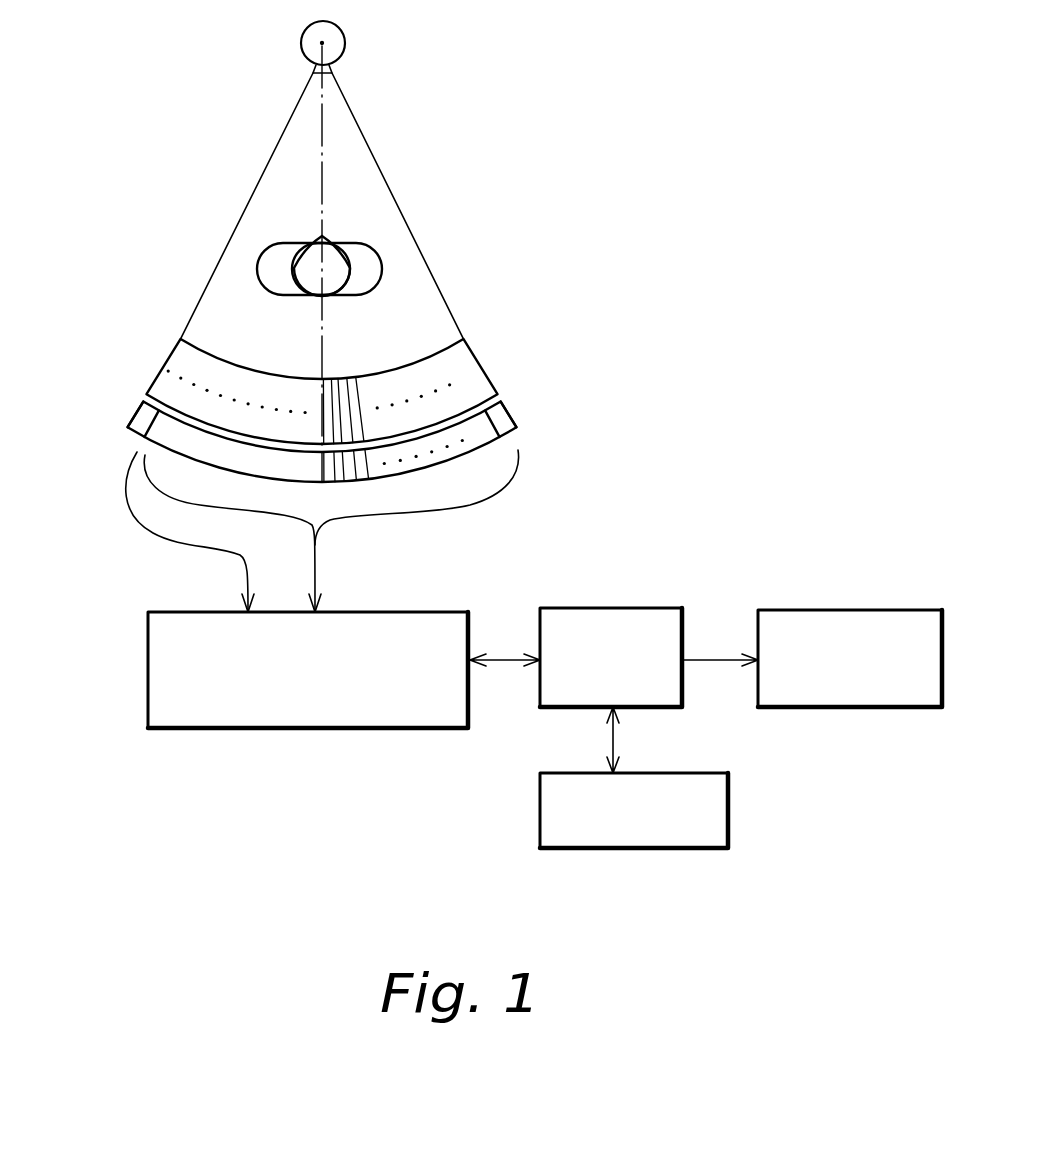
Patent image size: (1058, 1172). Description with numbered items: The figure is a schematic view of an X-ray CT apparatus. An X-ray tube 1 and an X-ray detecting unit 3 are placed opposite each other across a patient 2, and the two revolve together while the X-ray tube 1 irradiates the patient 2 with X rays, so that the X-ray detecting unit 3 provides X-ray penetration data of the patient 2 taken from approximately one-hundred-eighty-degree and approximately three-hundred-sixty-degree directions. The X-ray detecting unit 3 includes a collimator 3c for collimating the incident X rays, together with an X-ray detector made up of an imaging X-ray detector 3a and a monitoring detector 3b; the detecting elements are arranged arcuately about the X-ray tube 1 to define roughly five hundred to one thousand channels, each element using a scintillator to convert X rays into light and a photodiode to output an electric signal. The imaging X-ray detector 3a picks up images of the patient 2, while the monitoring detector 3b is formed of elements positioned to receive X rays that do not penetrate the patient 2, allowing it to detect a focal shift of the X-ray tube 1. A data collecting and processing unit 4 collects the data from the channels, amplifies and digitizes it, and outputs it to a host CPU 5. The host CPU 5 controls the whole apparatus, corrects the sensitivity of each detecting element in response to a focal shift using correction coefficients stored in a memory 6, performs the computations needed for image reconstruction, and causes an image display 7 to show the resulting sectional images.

The X-ray tube 1 is at (336, 44).
The patient 2 is at (360, 258).
The X-ray detecting unit 3 is at (325, 354).
The imaging X-ray detector 3a is at (483, 430).
The monitoring detector 3b is at (144, 414).
The collimator 3c is at (447, 362).
The data collecting and processing unit 4 is at (148, 636).
The host CPU 5 is at (657, 621).
The memory 6 is at (567, 836).
The image display 7 is at (850, 617).